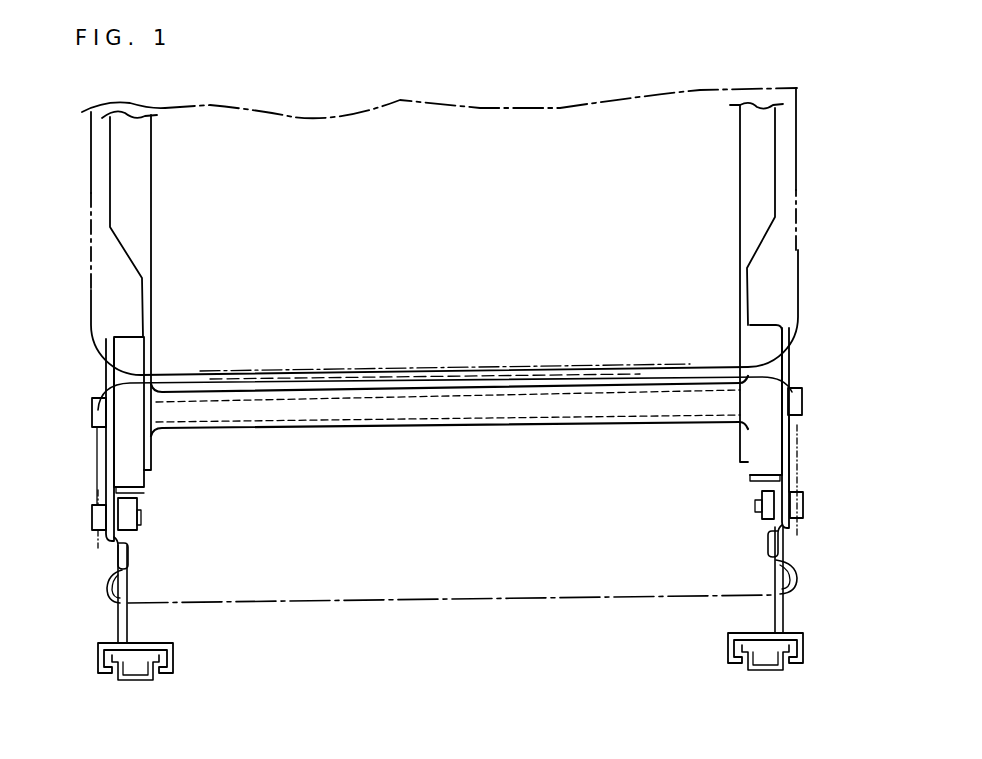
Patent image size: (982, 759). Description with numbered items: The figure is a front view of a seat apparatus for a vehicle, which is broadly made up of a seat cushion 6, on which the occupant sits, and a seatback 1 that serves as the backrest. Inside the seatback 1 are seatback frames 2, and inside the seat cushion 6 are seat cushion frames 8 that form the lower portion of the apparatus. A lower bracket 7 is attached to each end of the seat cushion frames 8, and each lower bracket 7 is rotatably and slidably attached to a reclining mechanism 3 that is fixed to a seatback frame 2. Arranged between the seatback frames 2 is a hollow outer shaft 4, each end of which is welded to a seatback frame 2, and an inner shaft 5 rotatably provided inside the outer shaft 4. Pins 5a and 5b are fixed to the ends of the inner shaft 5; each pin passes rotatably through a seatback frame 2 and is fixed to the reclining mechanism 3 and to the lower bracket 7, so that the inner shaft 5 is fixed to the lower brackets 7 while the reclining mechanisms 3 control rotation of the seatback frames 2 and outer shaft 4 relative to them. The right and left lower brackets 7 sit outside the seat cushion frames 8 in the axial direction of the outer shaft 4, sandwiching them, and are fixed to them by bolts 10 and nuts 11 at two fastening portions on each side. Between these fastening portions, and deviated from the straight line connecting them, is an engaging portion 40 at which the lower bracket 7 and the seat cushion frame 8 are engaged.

The seatback 1 is at (90, 193).
The seatback frames 2 is at (151, 185).
The reclining mechanism 3 is at (123, 338).
The outer shaft 4 is at (397, 425).
The inner shaft 5 is at (458, 427).
The pin 5a is at (803, 396).
The pin 5b is at (92, 413).
The seat cushion 6 is at (465, 598).
The lower bracket 7 is at (108, 460).
The seat cushion frames 8 is at (128, 625).
The bolt 10 is at (92, 517).
The nut 11 is at (130, 504).
The engaging portion 40 is at (108, 558).